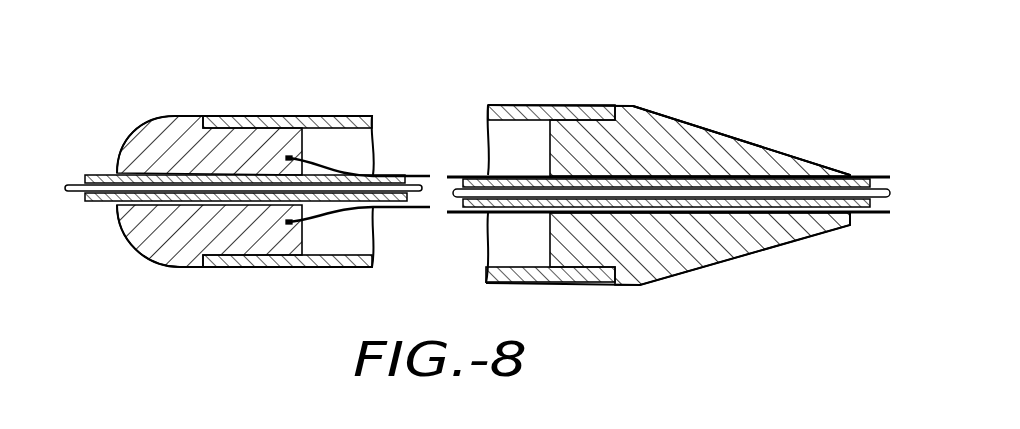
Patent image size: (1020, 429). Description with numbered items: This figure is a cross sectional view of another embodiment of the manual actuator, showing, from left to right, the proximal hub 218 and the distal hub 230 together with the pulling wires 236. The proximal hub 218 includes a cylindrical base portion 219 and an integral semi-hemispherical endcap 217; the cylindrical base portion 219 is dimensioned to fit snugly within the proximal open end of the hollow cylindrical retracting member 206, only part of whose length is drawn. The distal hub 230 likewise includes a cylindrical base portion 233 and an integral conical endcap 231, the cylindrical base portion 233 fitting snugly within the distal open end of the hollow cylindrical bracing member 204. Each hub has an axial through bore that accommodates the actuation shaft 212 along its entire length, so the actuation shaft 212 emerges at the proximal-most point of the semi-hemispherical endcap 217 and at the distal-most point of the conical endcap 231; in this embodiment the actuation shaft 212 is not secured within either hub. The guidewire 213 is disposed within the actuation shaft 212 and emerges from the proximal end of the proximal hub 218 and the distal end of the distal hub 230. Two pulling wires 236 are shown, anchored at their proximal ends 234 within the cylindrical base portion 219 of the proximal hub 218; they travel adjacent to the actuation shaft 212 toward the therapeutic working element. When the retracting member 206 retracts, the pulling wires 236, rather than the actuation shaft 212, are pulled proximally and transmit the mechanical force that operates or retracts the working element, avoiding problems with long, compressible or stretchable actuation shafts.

The bracing member 204 is at (525, 112).
The retracting member 206 is at (252, 122).
The actuation shaft 212 is at (100, 173).
The guidewire 213 is at (75, 193).
The semi-hemispherical endcap 217 is at (172, 122).
The proximal hub 218 is at (147, 283).
The cylindrical base portion 219 is at (238, 262).
The distal hub 230 is at (720, 104).
The conical endcap 231 is at (777, 162).
The cylindrical base portion 233 is at (617, 147).
The proximal ends 234 is at (288, 157).
The pulling wires 236 is at (415, 209).